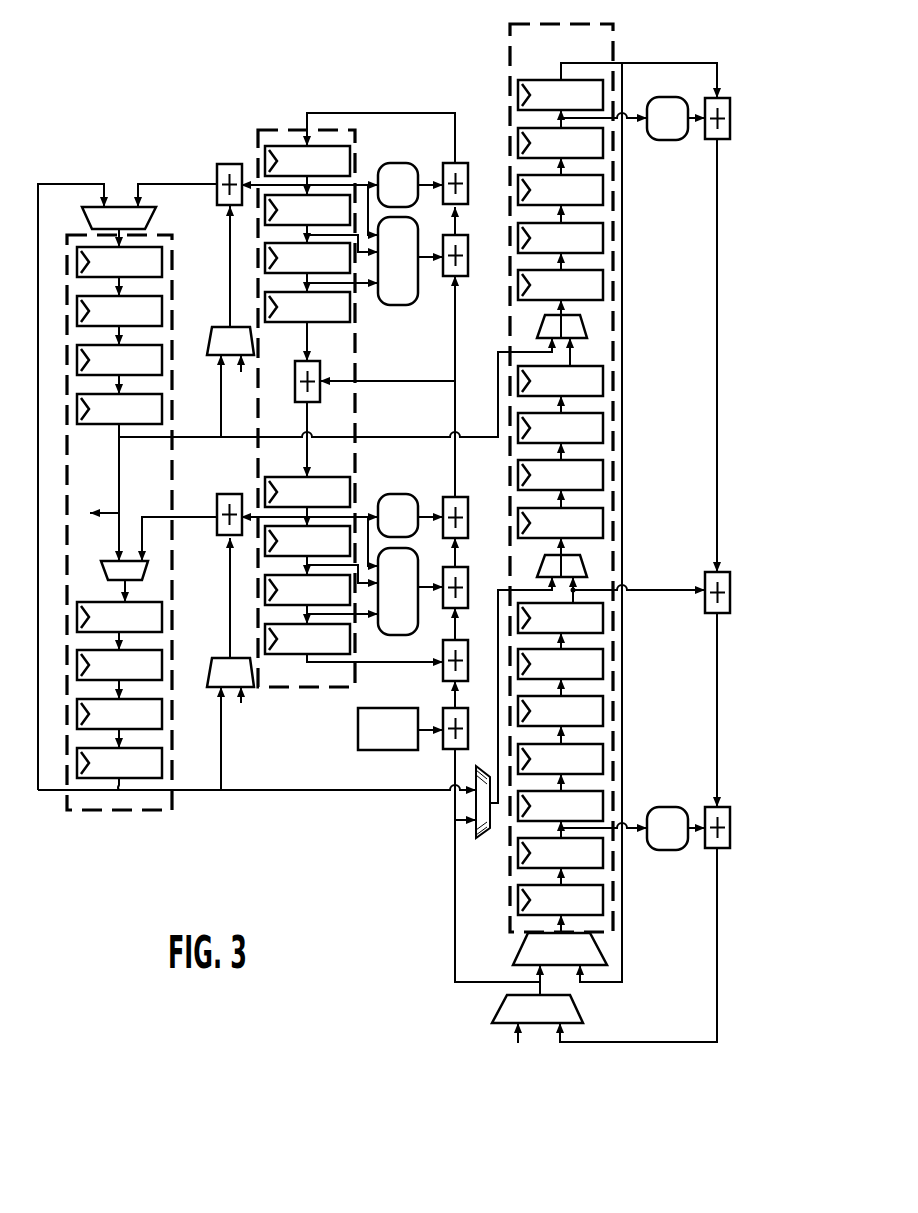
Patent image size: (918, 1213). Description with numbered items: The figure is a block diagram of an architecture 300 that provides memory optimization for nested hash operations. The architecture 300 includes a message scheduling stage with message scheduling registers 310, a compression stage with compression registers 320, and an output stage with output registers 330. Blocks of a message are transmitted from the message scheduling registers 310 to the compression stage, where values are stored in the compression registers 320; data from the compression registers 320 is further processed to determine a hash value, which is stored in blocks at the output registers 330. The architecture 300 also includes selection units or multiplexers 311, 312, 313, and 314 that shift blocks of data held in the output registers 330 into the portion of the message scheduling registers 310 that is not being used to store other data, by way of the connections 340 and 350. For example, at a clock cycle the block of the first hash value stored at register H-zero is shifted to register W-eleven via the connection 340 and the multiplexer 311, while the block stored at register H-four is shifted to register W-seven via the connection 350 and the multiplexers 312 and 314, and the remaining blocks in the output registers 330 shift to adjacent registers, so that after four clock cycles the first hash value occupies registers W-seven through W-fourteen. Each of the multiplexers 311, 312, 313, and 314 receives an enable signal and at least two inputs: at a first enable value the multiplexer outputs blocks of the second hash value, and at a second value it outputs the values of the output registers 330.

The architecture 300 is at (120, 122).
The message scheduling registers 310 is at (508, 46).
The multiplexer 311 is at (580, 320).
The multiplexer 312 is at (580, 560).
The multiplexer 313 is at (598, 952).
The multiplexer 314 is at (490, 820).
The compression registers 320 is at (305, 688).
The output registers 330 is at (140, 812).
The connection 340 is at (426, 436).
The connection 350 is at (285, 793).